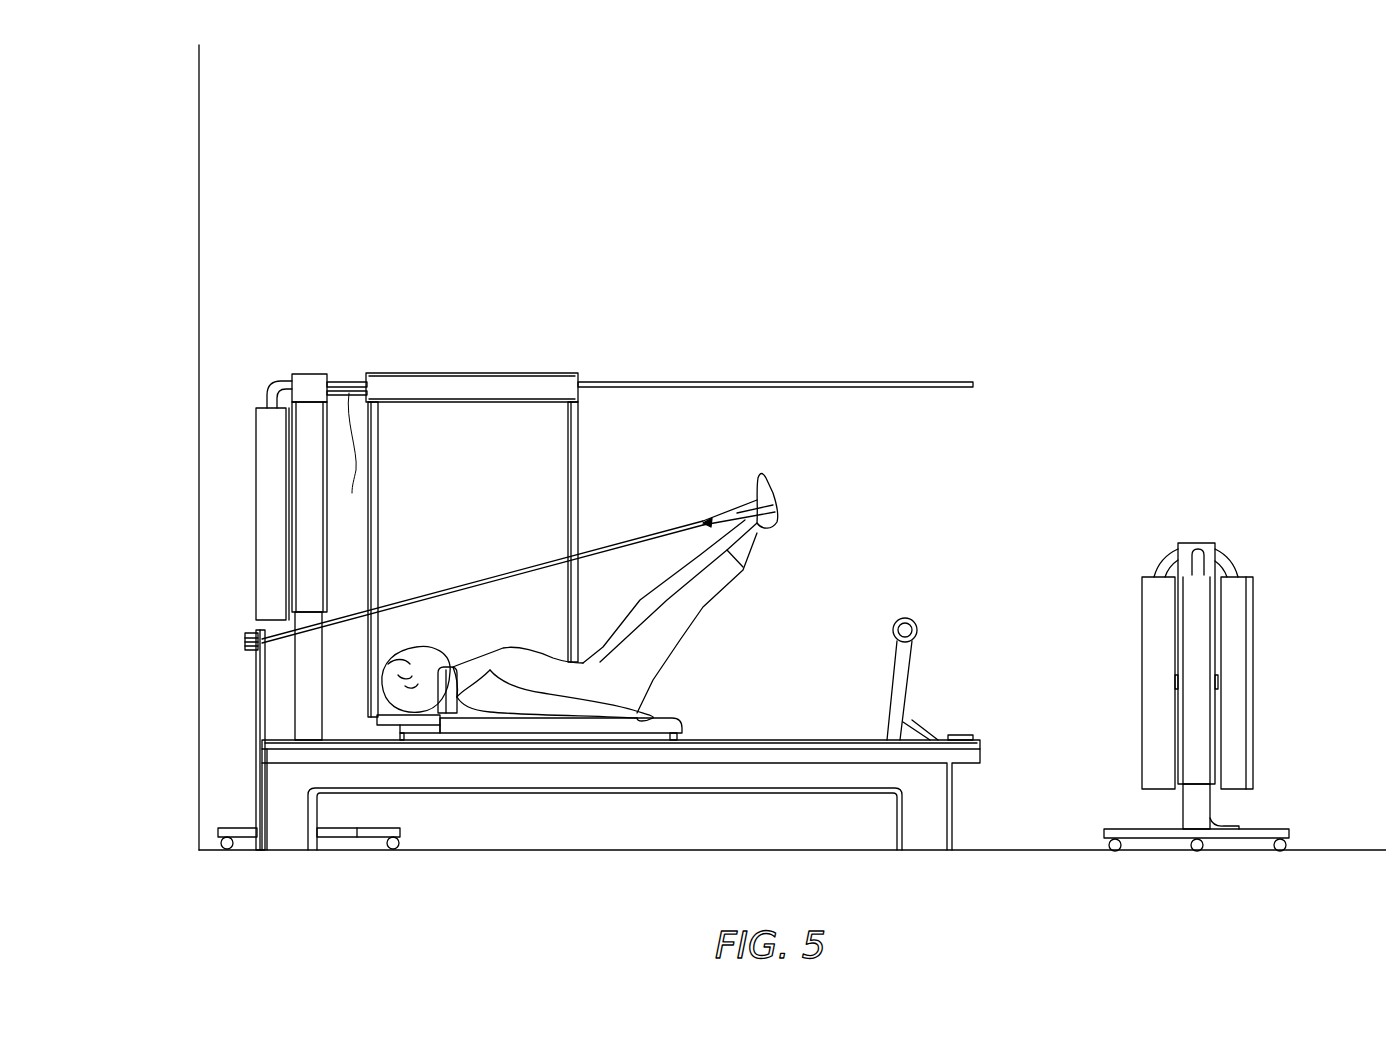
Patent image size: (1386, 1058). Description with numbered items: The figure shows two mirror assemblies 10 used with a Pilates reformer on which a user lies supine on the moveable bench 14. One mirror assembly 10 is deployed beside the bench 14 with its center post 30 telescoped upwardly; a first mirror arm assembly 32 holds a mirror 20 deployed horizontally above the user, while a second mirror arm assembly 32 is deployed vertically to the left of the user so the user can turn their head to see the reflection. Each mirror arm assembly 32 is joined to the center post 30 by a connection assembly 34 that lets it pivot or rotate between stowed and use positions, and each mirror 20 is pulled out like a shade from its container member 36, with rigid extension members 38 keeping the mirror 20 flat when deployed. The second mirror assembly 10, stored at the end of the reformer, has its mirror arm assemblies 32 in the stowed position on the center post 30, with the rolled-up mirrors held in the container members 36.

The mirror assembly 10 is at (729, 542).
The Pilates bench 14 is at (490, 775).
The mirror 20 is at (778, 382).
The center post 30 is at (307, 485).
The mirror arm assembly 32 is at (312, 374).
The connection assembly 34 is at (270, 388).
The container member 36 is at (303, 373).
The rigid extension member 38 is at (378, 460).